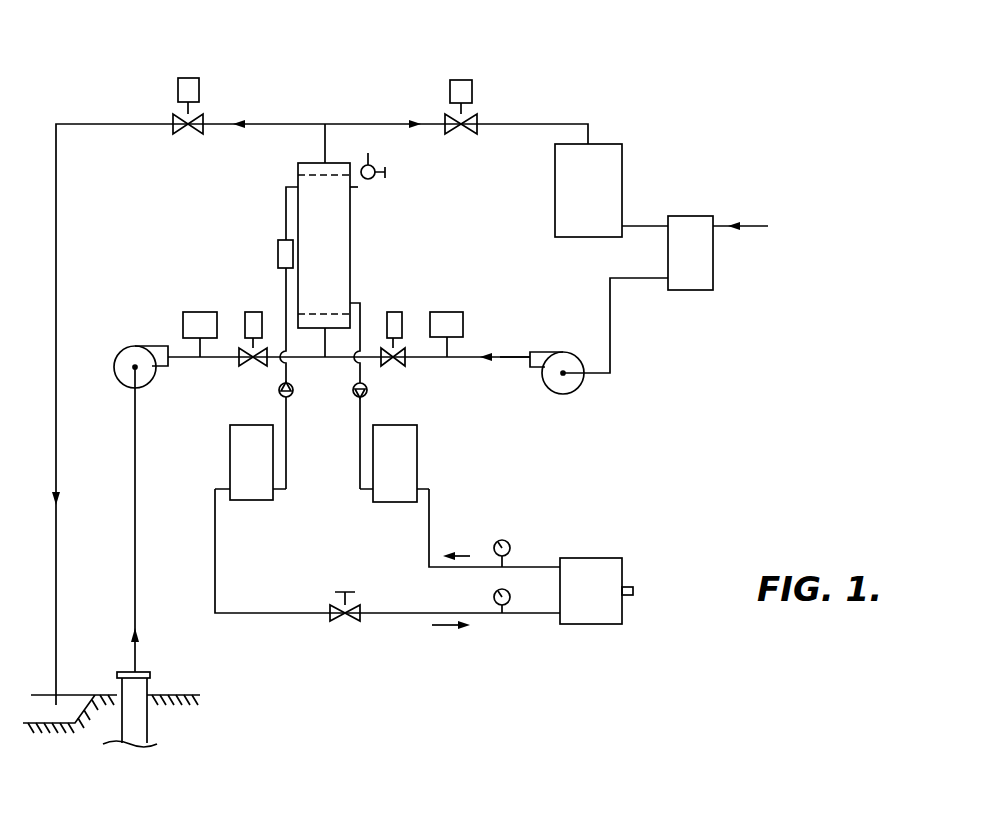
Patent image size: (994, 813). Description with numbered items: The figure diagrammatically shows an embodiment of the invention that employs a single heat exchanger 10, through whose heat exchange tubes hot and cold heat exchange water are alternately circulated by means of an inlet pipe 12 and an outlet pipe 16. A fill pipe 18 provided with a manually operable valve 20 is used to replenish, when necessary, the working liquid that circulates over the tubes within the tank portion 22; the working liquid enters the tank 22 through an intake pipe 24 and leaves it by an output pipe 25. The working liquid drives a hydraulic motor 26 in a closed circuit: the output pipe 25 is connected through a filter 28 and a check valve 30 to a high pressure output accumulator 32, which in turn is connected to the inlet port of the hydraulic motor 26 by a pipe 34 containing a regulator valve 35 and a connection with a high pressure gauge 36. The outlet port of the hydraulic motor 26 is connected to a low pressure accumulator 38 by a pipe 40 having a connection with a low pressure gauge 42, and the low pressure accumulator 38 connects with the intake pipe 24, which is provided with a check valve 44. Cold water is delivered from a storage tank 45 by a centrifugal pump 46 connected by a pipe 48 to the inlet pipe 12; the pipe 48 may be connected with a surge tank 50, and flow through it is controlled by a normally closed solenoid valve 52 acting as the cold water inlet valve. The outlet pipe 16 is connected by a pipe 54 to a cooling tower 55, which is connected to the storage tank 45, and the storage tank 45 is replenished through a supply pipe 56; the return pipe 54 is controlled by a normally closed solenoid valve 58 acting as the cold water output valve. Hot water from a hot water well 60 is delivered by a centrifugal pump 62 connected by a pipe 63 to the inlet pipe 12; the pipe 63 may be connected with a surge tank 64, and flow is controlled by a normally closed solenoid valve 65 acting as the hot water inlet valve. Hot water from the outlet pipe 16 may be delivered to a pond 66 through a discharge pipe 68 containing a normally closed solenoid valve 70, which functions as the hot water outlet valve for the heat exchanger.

The heat exchanger 10 is at (356, 245).
The inlet pipe 12 is at (325, 339).
The outlet pipe 16 is at (325, 143).
The fill pipe 18 is at (358, 187).
The manually operable valve 20 is at (374, 167).
The tank portion 22 is at (348, 268).
The intake pipe 24 is at (360, 303).
The output pipe 25 is at (286, 207).
The hydraulic motor 26 is at (593, 557).
The filter 28 is at (278, 252).
The check valve 30 is at (292, 395).
The high pressure output accumulator 32 is at (230, 440).
The pipe 34 is at (240, 612).
The regulator valve 35 is at (350, 623).
The high pressure gauge 36 is at (494, 595).
The low pressure accumulator 38 is at (418, 458).
The pipe 40 is at (432, 514).
The low pressure gauge 42 is at (510, 543).
The check valve 44 is at (366, 392).
The storage tank 45 is at (713, 282).
The centrifugal pump 46 is at (578, 385).
The pipe 48 is at (511, 360).
The surge tank 50 is at (463, 310).
The solenoid valve 52 is at (402, 310).
The pipe 54 is at (383, 123).
The cooling tower 55 is at (623, 160).
The supply pipe 56 is at (747, 224).
The solenoid valve 58 is at (472, 80).
The hot water well 60 is at (150, 685).
The centrifugal pump 62 is at (143, 345).
The pipe 63 is at (218, 359).
The surge tank 64 is at (197, 310).
The solenoid valve 65 is at (253, 310).
The pond 66 is at (77, 700).
The discharge pipe 68 is at (126, 121).
The solenoid valve 70 is at (199, 80).